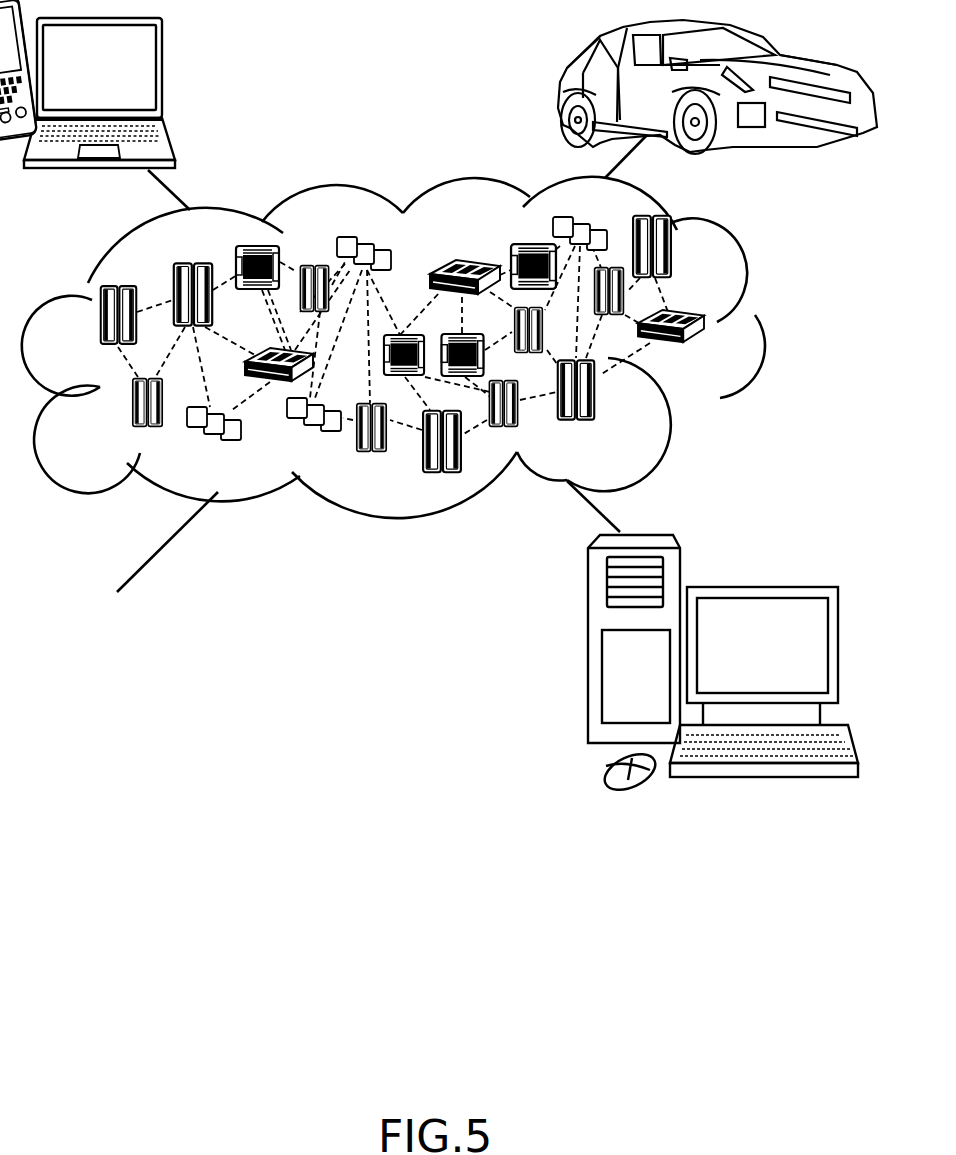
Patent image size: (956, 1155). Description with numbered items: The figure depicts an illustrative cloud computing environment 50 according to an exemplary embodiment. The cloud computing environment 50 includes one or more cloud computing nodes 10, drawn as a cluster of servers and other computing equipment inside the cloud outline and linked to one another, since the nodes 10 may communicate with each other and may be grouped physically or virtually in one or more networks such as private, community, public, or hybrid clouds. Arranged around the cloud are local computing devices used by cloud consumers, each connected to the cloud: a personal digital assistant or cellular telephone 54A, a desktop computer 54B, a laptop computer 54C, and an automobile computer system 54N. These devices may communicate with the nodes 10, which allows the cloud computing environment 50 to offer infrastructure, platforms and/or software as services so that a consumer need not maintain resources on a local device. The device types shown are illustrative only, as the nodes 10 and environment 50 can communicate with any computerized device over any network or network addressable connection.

The cloud computing node 10 is at (714, 354).
The cloud computing environment 50 is at (758, 323).
The personal digital assistant or cellular telephone 54A is at (153, 672).
The desktop computer 54B is at (762, 586).
The laptop computer 54C is at (162, 76).
The automobile computer system 54N is at (561, 91).